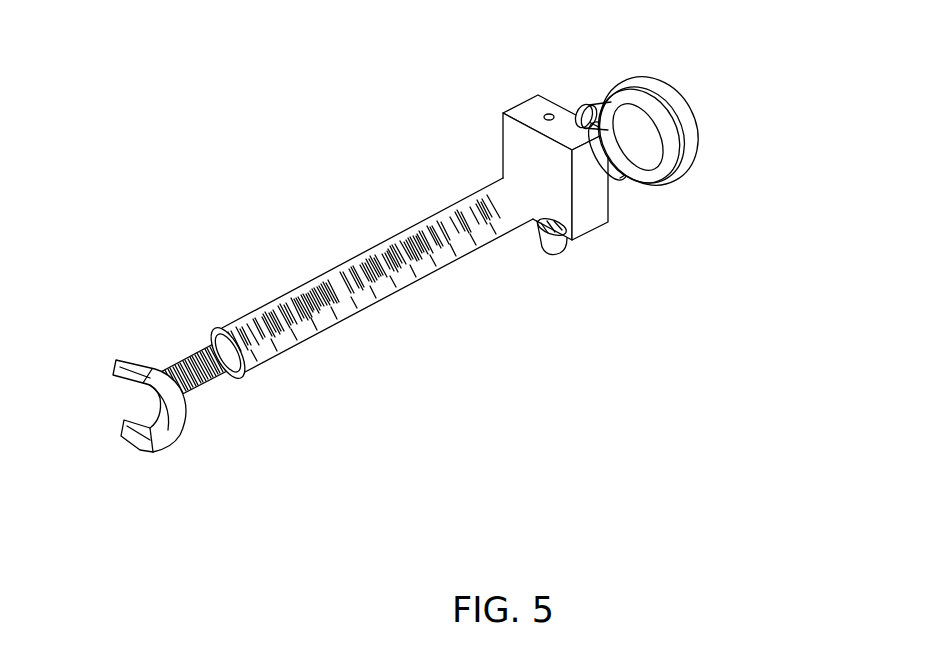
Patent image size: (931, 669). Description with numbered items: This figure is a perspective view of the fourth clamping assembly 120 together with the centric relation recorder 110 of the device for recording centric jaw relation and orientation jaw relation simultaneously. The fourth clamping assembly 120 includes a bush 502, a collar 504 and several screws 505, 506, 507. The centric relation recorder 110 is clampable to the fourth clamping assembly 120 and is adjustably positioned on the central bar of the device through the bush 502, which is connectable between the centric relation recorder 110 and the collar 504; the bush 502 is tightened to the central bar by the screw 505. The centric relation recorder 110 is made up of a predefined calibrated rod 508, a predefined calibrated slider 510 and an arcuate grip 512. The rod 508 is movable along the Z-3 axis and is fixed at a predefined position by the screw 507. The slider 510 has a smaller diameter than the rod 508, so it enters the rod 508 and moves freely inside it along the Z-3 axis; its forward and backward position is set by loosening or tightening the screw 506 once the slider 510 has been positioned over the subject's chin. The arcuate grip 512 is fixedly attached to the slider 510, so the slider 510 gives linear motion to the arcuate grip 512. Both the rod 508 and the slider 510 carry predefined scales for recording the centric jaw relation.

The centric relation recorder 110 is at (500, 187).
The fourth clamping assembly 120 is at (565, 383).
The bush 502 is at (590, 213).
The collar 504 is at (630, 168).
The screw 505 is at (596, 107).
The screw 506 is at (697, 135).
The screw 507 is at (563, 257).
The predefined calibrated rod 508 is at (428, 258).
The predefined calibrated slider 510 is at (218, 380).
The arcuate grip 512 is at (130, 353).
The Z-3 axis Z-3 is at (572, 170).